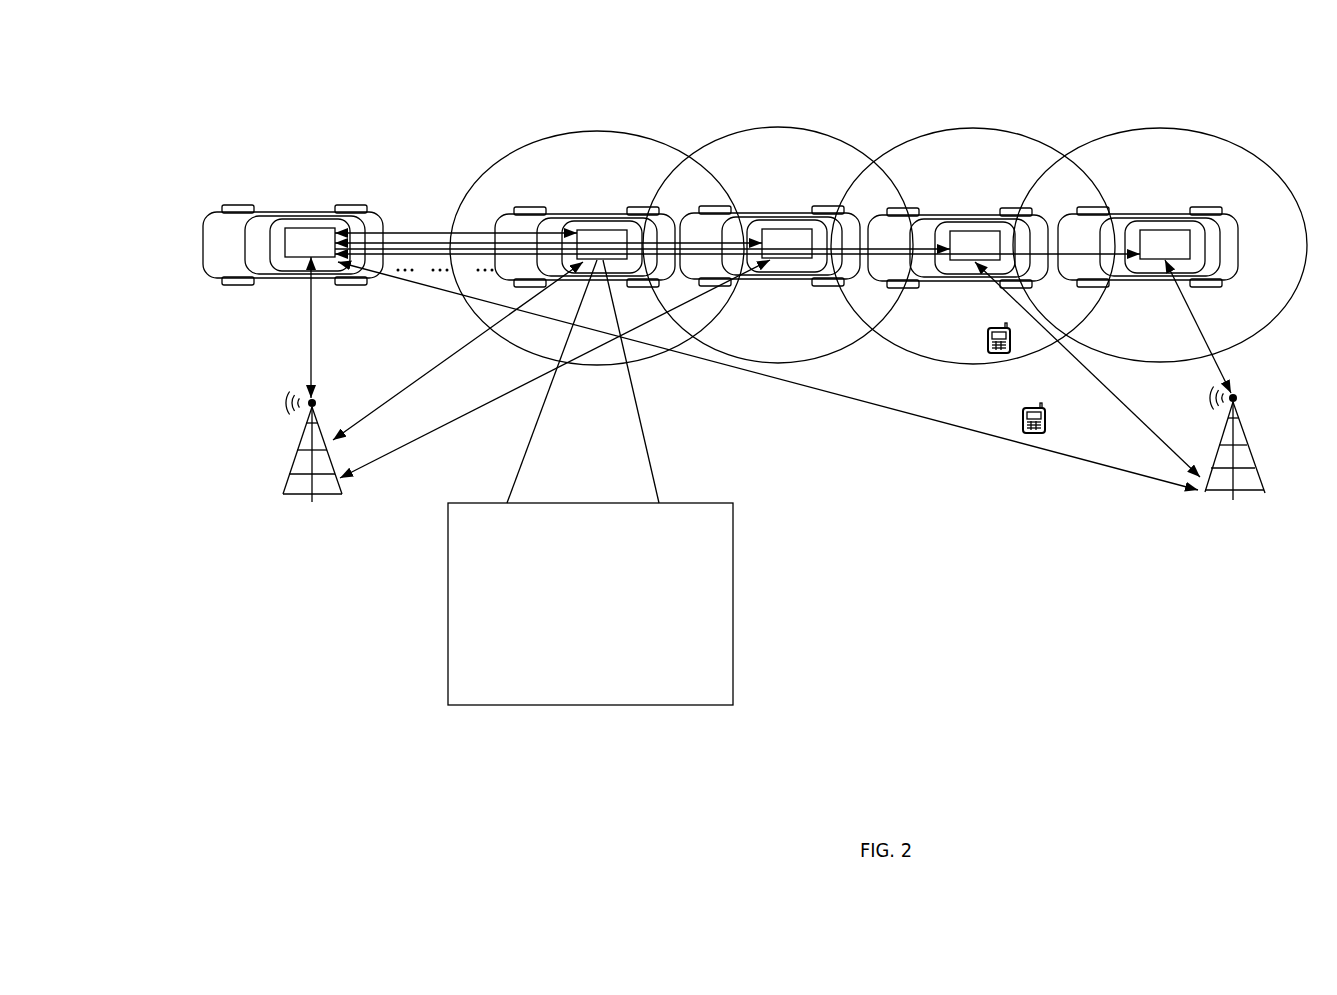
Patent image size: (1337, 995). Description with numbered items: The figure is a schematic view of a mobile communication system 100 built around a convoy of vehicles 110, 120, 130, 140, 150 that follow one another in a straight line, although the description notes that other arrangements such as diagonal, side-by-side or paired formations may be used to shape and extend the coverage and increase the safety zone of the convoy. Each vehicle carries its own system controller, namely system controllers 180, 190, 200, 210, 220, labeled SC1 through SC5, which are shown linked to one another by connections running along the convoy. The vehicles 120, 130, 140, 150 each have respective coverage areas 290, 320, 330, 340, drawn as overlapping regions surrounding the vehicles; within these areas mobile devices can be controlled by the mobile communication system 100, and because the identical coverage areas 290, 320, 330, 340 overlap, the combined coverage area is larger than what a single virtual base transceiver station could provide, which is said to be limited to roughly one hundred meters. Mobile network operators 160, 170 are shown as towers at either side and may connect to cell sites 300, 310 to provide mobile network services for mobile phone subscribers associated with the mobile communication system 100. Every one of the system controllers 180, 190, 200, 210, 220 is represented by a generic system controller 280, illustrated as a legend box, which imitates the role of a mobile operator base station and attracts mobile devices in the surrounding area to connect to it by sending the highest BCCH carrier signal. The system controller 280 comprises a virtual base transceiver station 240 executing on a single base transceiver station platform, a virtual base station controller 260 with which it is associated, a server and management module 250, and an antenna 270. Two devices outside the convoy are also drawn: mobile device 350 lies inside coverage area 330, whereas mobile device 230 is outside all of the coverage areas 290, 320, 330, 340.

The mobile communication system 100 is at (958, 658).
The vehicle 110 is at (293, 208).
The vehicle 120 is at (585, 215).
The vehicle 130 is at (770, 213).
The vehicle 140 is at (958, 216).
The vehicle 150 is at (1148, 214).
The mobile network operator 160 is at (287, 456).
The mobile network operator 170 is at (1210, 450).
The system controller 180 is at (316, 228).
The system controller 190 is at (603, 229).
The system controller 200 is at (788, 228).
The system controller 210 is at (982, 230).
The system controller 220 is at (1160, 229).
The mobile device 230 is at (1022, 410).
The virtual base transceiver station (vBTS) 240 is at (587, 527).
The server and management module 250 is at (571, 587).
The virtual base station controller 260 is at (554, 647).
The antenna 270 is at (525, 695).
The system controller 280 is at (624, 598).
The coverage area 290 is at (470, 178).
The cell site 300 is at (1213, 450).
The cell site 310 is at (292, 462).
The coverage area 320 is at (747, 125).
The coverage area 330 is at (957, 125).
The coverage area 340 is at (1152, 125).
The mobile device 350 is at (986, 330).